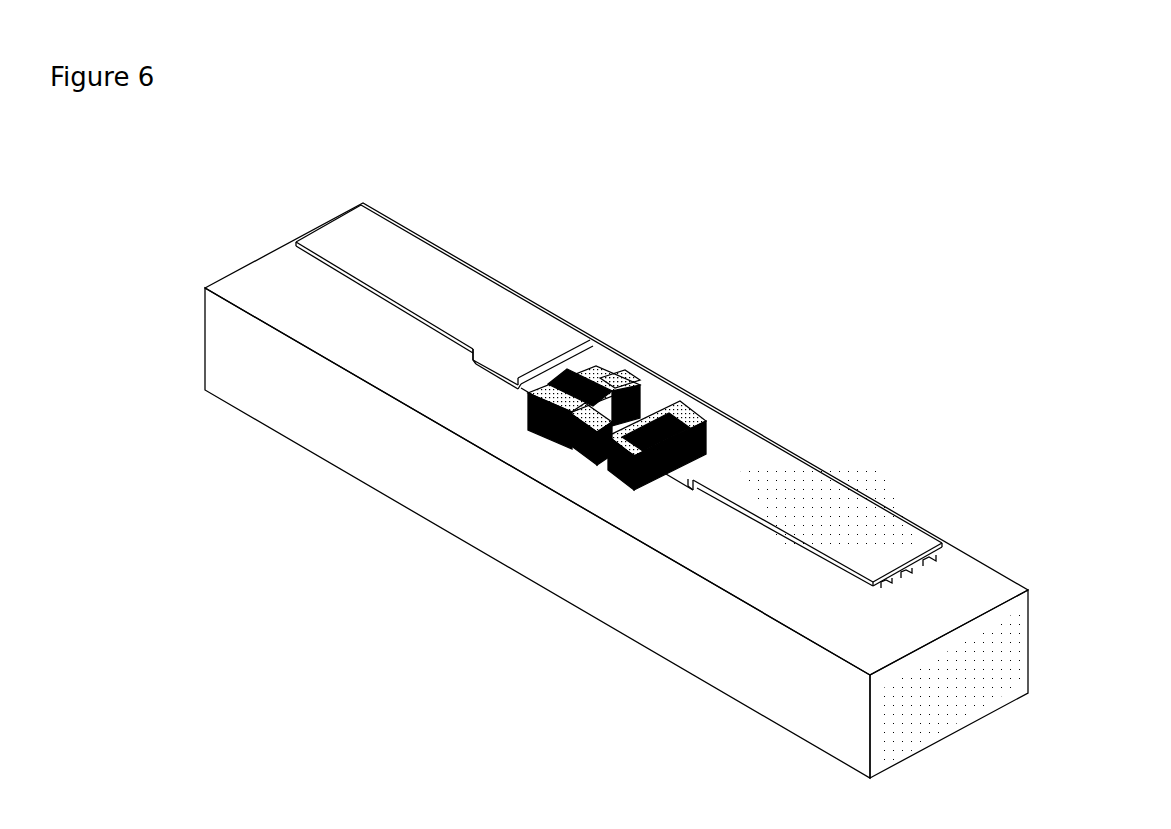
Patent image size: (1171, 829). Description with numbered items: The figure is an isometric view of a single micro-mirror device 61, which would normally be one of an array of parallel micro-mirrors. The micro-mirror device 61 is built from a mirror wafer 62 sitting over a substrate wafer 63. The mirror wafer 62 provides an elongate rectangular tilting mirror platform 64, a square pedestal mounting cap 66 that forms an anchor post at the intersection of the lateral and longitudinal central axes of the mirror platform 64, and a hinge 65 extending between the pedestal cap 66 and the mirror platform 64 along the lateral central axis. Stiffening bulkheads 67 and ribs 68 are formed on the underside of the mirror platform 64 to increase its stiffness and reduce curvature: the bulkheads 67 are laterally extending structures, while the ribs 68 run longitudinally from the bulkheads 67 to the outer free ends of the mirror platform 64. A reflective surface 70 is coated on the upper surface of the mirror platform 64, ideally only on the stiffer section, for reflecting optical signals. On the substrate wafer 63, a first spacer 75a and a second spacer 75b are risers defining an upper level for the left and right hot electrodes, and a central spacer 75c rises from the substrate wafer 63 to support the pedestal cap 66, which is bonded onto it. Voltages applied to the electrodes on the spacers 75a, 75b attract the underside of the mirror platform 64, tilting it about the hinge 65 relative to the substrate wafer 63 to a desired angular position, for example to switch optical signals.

The micro-mirror device 61 is at (772, 333).
The mirror wafer 62 is at (357, 200).
The substrate wafer 63 is at (268, 388).
The tilting mirror platform 64 is at (823, 495).
The hinge 65 is at (632, 383).
The pedestal mounting cap 66 is at (633, 388).
The stiffening bulkhead 67 is at (487, 362).
The stiffening rib 68 is at (890, 585).
The reflective surface 70 is at (449, 302).
The first spacer 75a is at (535, 430).
The second spacer 75b is at (629, 488).
The central spacer 75c is at (573, 443).